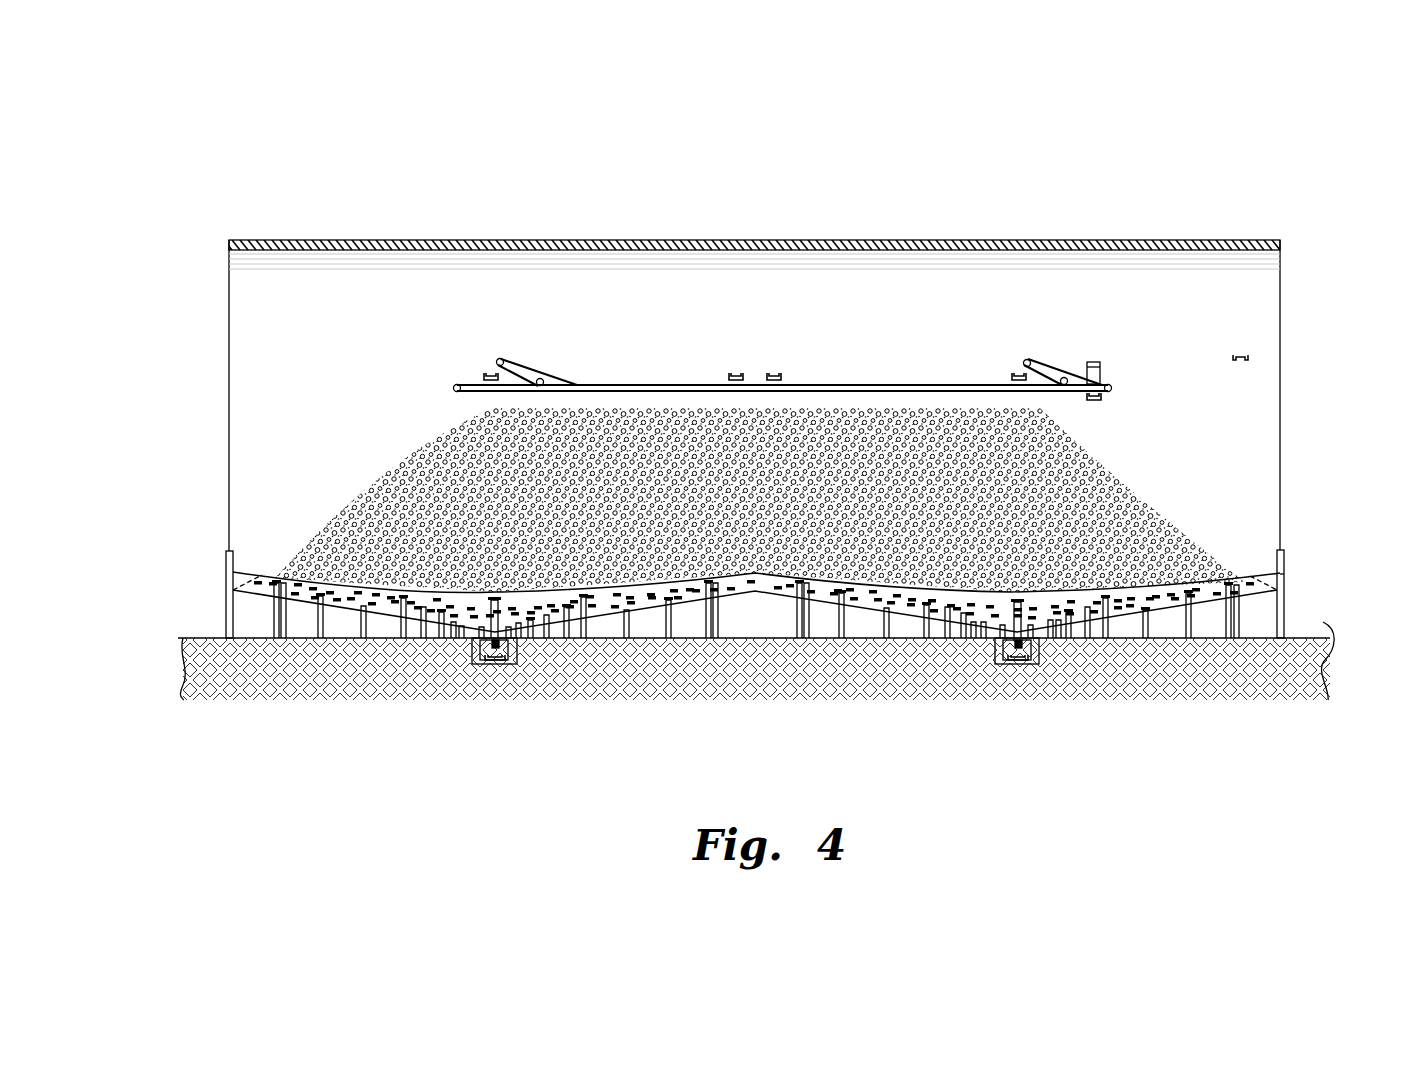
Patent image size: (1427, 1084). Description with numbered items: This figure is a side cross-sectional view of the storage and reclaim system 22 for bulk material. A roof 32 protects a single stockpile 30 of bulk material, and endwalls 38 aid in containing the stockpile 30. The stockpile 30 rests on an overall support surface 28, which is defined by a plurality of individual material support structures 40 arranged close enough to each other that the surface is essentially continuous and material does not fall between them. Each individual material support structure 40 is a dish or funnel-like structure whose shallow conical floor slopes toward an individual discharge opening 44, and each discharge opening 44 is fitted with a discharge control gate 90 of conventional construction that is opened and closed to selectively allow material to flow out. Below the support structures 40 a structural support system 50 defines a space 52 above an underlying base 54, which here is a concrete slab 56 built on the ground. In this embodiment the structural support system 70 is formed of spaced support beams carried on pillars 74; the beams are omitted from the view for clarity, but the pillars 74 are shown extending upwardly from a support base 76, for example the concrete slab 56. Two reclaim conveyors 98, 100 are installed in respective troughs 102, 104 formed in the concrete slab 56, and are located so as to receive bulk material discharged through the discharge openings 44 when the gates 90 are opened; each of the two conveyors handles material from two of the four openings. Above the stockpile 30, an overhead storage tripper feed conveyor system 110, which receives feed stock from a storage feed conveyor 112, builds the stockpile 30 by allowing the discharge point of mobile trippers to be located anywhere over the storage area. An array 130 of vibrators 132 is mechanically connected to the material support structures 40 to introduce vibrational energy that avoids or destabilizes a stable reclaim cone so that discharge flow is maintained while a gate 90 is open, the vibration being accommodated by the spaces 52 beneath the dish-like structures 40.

The storage and reclaim system 22 is at (1172, 163).
The roof 32 is at (980, 241).
The overhead storage tripper feed conveyor system 110 is at (460, 342).
The storage feed conveyor 112 is at (1238, 362).
The stockpile 30 is at (1098, 520).
The overall support surface 28 is at (358, 563).
The endwalls 38 is at (226, 558).
The pillars 74 is at (788, 625).
The space 52 is at (252, 622).
The individual material support structure 40 is at (282, 575).
The discharge opening 44 is at (475, 640).
The underlying base 54 is at (290, 630).
The vibrators 132 is at (455, 603).
The array of vibrators 130 is at (648, 623).
The discharge control gate 90 is at (515, 650).
The reclaim conveyor 98 is at (505, 663).
The trough 102 is at (484, 665).
The reclaim conveyor 100 is at (1007, 663).
The trough 104 is at (1032, 665).
The structural support system 70 is at (1350, 635).
The support base 76 is at (1295, 637).
The concrete slab 56 is at (1192, 672).
The structural support system 50 is at (1318, 588).